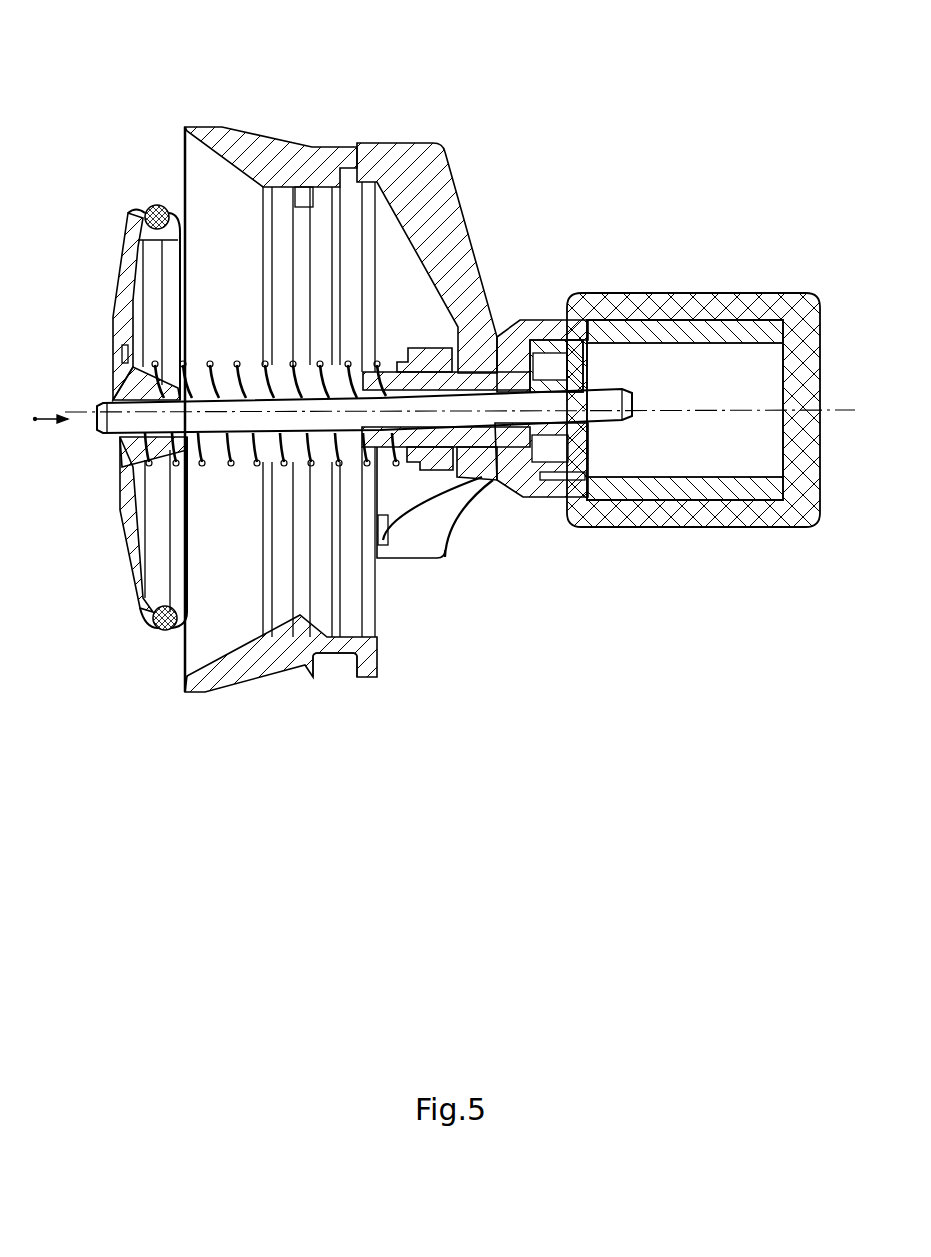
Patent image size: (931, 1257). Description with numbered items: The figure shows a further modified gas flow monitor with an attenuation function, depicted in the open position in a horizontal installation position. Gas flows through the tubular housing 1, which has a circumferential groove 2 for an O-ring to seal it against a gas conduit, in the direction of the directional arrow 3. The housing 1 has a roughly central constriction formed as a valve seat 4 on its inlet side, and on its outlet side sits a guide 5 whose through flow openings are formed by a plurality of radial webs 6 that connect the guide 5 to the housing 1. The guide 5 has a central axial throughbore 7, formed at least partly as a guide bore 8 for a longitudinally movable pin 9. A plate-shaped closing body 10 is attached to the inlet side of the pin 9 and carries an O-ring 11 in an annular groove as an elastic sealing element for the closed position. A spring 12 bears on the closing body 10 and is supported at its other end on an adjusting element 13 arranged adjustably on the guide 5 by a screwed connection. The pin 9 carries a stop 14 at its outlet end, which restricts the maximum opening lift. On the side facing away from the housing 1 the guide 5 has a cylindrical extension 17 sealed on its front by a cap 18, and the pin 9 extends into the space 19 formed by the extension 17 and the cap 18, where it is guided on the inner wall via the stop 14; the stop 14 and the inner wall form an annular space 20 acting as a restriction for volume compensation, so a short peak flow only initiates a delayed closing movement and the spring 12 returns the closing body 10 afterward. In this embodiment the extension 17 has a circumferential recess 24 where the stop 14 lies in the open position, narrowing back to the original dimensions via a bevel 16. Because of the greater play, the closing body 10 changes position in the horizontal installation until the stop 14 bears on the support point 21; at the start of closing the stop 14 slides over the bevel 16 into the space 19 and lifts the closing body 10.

The housing 1 is at (260, 658).
The circumferential groove 2 is at (338, 667).
The directional arrow 3 is at (35, 419).
The valve seat 4 is at (283, 625).
The guide 5 is at (452, 438).
The radial webs 6 is at (422, 528).
The throughbore 7 is at (452, 390).
The guide bore 8 is at (345, 356).
The pin 9 is at (515, 408).
The closing body 10 is at (140, 578).
The O-ring 11 is at (165, 628).
The spring 12 is at (230, 465).
The adjusting element 13 is at (422, 358).
The stop 14 is at (577, 367).
The bevel 16 is at (485, 478).
The cylindrical extension 17 is at (522, 330).
The cap 18 is at (682, 305).
The space 19 is at (753, 375).
The annular space 20 is at (650, 343).
The support point 21 is at (583, 342).
The circumferential recess 24 is at (557, 477).